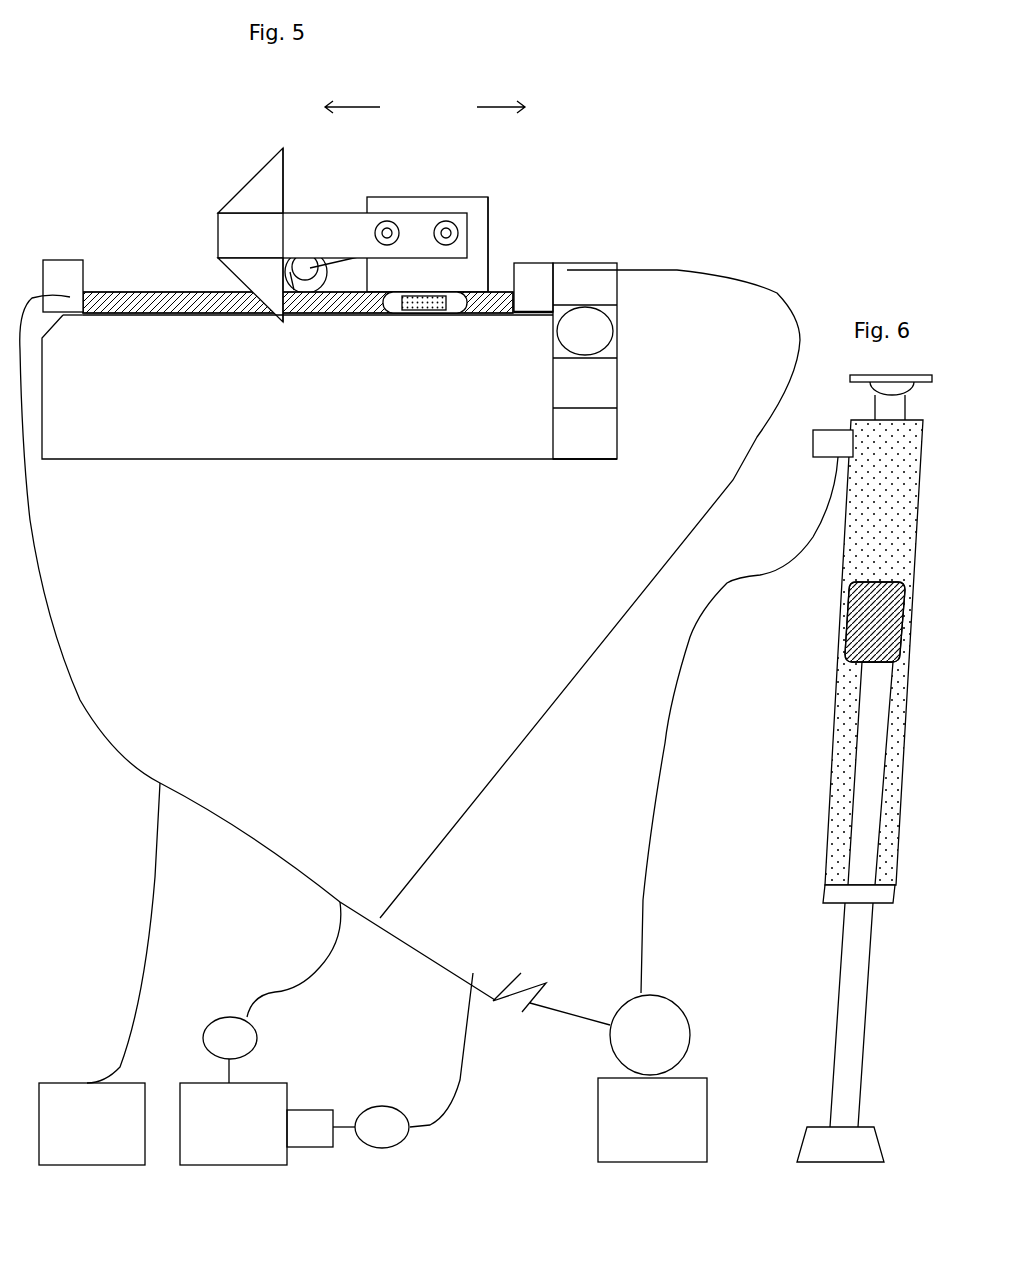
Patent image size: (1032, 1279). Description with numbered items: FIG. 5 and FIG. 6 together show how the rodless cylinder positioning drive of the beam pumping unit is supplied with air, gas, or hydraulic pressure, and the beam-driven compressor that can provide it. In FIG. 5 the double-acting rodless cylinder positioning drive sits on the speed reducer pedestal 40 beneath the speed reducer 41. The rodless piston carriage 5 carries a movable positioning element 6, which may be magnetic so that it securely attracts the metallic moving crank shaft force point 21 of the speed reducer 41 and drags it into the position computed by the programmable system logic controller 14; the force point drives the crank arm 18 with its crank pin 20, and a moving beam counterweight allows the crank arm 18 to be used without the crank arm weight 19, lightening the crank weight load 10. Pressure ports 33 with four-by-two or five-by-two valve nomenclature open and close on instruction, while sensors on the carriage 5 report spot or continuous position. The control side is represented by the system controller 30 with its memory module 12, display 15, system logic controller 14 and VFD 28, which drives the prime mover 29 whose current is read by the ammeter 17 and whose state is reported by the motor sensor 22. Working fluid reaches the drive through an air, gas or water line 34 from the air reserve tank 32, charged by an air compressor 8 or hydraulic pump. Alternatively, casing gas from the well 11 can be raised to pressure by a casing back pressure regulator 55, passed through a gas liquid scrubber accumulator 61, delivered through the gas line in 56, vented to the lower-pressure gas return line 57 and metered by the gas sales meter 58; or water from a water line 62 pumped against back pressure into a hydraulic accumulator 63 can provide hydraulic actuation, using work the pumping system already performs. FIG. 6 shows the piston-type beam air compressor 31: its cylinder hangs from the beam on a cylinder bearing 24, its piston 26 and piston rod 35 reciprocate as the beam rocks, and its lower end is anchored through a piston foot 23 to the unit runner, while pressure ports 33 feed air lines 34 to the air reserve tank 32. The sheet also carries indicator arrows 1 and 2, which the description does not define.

In FIG. 5, the application device 1 is at (503, 238).
In FIG. 5, the build platform 2 is at (129, 343).
In FIG. 5, the carriage 5 is at (205, 313).
In FIG. 5, the positioning element 6 is at (418, 313).
In FIG. 5, the air compressor 8 is at (630, 1127).
In FIG. 5, the crank weight load 10 is at (236, 130).
In FIG. 5, the well 11 is at (210, 1132).
In FIG. 5, the memory module 12 is at (612, 311).
In FIG. 5, the system logic controller 14 is at (573, 397).
In FIG. 5, the display 15 is at (573, 339).
In FIG. 5, the ammeter 17 is at (573, 297).
In FIG. 5, the crank arm 18 is at (230, 232).
In FIG. 5, the crank arm weight 19 is at (262, 178).
In FIG. 5, the crank pin 20 is at (385, 228).
In FIG. 5, the moving crank shaft force point 21 is at (445, 228).
In FIG. 5, the motor sensor 22 is at (306, 272).
In FIG. 6, the piston foot 23 is at (822, 1141).
In FIG. 6, the cylinder bearing 24 is at (880, 385).
In FIG. 6, the piston 26 is at (868, 633).
In FIG. 5, the VFD 28 is at (573, 447).
In FIG. 5, the prime mover 29 is at (292, 285).
In FIG. 5, the system controller 30 is at (583, 244).
In FIG. 6, the beam air compressor 31 is at (814, 718).
In FIG. 5, the air reserve tank 32 is at (638, 1047).
In FIG. 5, the pressure port 33 is at (63, 277).
In FIG. 6, the pressure port 33 is at (827, 443).
In FIG. 5, the air line 34 is at (44, 565).
In FIG. 6, the piston rod 35 is at (848, 1070).
In FIG. 5, the speed reducer pedestal 40 is at (313, 437).
In FIG. 5, the speed reducer 41 is at (475, 210).
In FIG. 5, the casing back pressure regulator 55 is at (298, 1142).
In FIG. 5, the gas line in 56 is at (461, 1058).
In FIG. 5, the gas return line 57 is at (148, 910).
In FIG. 5, the gas sales meter 58 is at (70, 1132).
In FIG. 5, the gas liquid scrubber accumulator 61 is at (370, 1139).
In FIG. 5, the water line 62 is at (320, 963).
In FIG. 5, the hydraulic accumulator 63 is at (218, 1050).